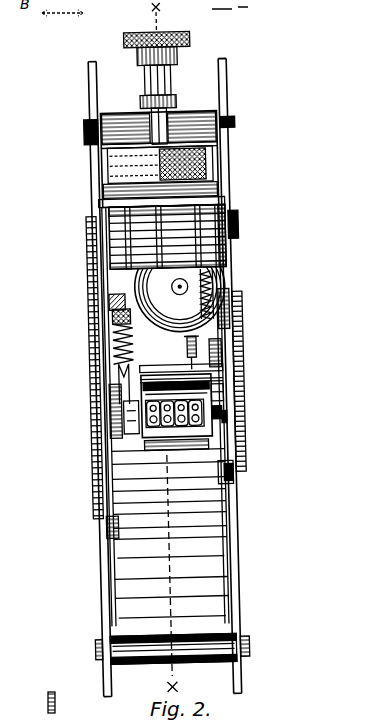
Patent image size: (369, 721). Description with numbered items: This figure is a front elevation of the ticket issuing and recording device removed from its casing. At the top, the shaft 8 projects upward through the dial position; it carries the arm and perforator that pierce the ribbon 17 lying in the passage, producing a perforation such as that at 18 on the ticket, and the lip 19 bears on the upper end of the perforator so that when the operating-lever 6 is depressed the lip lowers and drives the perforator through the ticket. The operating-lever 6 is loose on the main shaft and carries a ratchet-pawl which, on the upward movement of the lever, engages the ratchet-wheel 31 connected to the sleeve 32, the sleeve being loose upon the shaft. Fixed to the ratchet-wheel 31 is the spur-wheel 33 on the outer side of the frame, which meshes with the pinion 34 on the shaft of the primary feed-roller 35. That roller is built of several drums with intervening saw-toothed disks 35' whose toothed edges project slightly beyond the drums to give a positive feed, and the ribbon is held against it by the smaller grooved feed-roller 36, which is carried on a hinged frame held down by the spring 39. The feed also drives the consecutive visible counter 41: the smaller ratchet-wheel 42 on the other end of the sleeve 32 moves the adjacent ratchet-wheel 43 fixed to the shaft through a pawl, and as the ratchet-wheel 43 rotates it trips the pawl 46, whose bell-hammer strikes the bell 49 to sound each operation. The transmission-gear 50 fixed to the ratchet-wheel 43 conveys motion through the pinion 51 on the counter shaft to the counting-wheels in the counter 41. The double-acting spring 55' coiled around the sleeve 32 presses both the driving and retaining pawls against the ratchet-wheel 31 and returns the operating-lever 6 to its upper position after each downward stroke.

The operating-lever 6 is at (112, 313).
The shaft 8 is at (176, 108).
The ribbon 17 is at (222, 283).
The perforation 18 is at (182, 353).
The lip 19 is at (132, 113).
The ratchet-wheel 31 is at (120, 398).
The sleeve 32 is at (217, 363).
The spur-wheel 33 is at (92, 442).
The pinion 34 is at (92, 250).
The primary feed-roller 35 is at (167, 236).
The saw-toothed disks 35' is at (159, 237).
The smaller feed-roller 36 is at (115, 183).
The spring 39 is at (219, 158).
The consecutive visible counter 41 is at (207, 438).
The smaller ratchet-wheel 42 is at (224, 392).
The ratchet-wheel 43 is at (224, 400).
The pawl 46 is at (236, 327).
The bell 49 is at (180, 300).
The transmission-gear 50 is at (236, 375).
The pinion 51 is at (236, 420).
The double-acting spring 55' is at (137, 343).